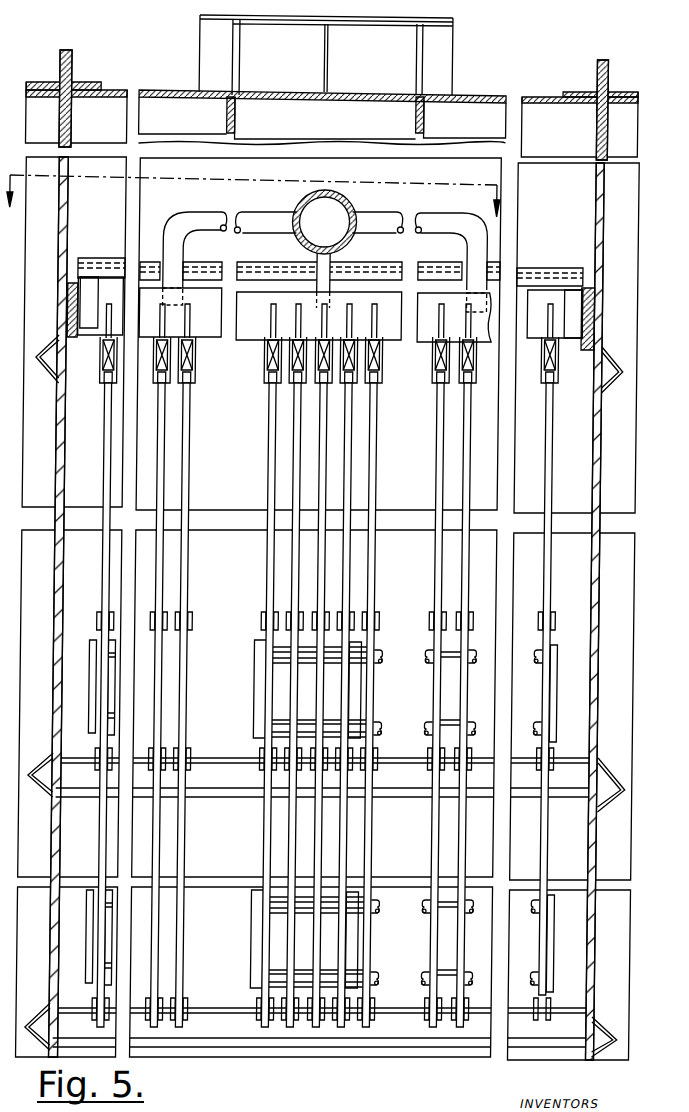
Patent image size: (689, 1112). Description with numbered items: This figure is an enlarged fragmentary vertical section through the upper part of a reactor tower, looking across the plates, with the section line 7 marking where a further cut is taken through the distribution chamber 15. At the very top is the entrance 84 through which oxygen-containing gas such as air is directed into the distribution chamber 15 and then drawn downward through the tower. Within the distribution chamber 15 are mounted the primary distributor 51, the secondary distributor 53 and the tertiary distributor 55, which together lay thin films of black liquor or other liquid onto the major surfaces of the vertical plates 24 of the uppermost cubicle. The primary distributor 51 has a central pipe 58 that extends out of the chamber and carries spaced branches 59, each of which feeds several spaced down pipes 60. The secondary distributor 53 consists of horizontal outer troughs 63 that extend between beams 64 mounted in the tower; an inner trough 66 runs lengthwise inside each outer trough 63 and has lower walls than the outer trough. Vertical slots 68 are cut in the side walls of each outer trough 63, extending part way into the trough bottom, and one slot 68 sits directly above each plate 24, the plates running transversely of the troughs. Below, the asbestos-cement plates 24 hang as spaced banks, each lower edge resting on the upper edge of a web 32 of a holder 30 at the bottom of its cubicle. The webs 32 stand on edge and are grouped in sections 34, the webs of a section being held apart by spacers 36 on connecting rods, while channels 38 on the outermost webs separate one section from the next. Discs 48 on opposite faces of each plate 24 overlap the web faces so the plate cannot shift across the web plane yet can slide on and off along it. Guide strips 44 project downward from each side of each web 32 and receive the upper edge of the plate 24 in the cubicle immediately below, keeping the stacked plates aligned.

The section line 7- 7 is at (262, 203).
The distribution chamber 15 is at (473, 118).
The vertical plates 24 is at (461, 462).
The holder 30 is at (321, 813).
The webs 32 is at (294, 673).
The sections 34 is at (264, 687).
The spacers 36 is at (428, 653).
The channels 38 is at (357, 683).
The guide strips 44 is at (259, 750).
The discs 48 is at (430, 623).
The primary distributor 51 is at (341, 207).
The secondary distributor 53 is at (534, 297).
The tertiary distributor 55 is at (428, 378).
The central pipe 58 is at (293, 207).
The branches 59 is at (434, 221).
The down pipes 60 is at (468, 252).
The outer troughs 63 is at (204, 330).
The beams 64 is at (70, 293).
The inner trough 66 is at (494, 330).
The slots 68 is at (294, 320).
The entrance 84 is at (198, 11).